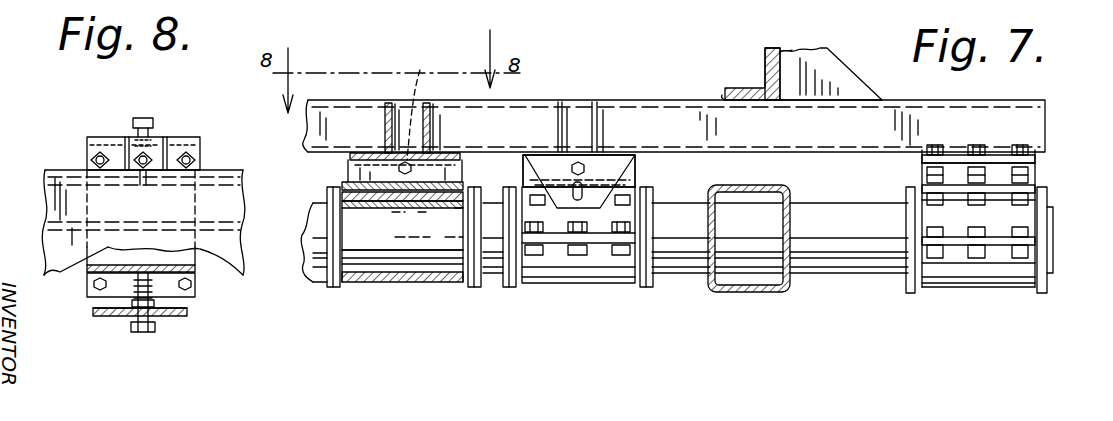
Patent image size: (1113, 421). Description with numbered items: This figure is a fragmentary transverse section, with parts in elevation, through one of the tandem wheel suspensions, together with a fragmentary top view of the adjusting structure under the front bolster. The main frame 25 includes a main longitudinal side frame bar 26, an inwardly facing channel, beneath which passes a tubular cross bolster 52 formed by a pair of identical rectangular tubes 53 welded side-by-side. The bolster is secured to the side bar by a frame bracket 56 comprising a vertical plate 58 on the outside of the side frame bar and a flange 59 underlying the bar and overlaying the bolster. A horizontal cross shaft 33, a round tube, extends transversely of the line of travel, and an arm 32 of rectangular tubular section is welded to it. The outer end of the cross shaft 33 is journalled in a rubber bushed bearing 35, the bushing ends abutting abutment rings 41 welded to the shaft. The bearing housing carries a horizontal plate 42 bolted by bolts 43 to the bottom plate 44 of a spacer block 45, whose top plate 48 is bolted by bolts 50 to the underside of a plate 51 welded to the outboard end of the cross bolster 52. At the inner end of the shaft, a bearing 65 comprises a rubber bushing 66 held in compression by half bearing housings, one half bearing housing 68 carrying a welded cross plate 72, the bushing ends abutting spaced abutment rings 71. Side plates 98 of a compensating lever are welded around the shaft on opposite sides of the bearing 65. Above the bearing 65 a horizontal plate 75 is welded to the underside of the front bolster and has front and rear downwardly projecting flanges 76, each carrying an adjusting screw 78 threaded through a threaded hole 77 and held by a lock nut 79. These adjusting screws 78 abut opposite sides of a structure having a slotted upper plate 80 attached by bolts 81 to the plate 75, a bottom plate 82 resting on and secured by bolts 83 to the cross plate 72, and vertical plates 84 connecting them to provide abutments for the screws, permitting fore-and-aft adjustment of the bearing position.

In FIG. 7, the main frame 25 is at (759, 51).
In FIG. 7, the main longitudinal side frame bar 26 is at (765, 50).
In FIG. 7, the arm 32 is at (750, 292).
In FIG. 7, the cross shaft 33 is at (422, 258).
In FIG. 7, the bearing 35 is at (996, 301).
In FIG. 7, the abutment ring 41 is at (910, 292).
In FIG. 7, the horizontal plate 42 is at (940, 197).
In FIG. 7, the bolt 43 is at (922, 202).
In FIG. 7, the bottom plate 44 is at (1035, 188).
In FIG. 7, the spacer block 45 is at (905, 178).
In FIG. 7, the top plate 48 is at (1035, 163).
In FIG. 7, the bolt 50 is at (1002, 142).
In FIG. 7, the plate 51 is at (992, 157).
In FIG. 7, the tubular cross bolster 52 is at (1036, 88).
In FIG. 8, the tube 53 is at (228, 248).
In FIG. 7, the tube 53 is at (928, 80).
In FIG. 7, the frame bracket 56 is at (875, 45).
In FIG. 7, the vertical plate 58 is at (782, 50).
In FIG. 7, the flange 59 is at (725, 95).
In FIG. 7, the bearing 65 is at (402, 297).
In FIG. 7, the rubber bushing 66 is at (445, 282).
In FIG. 7, the half bearing housing 68 is at (342, 207).
In FIG. 7, the abutment ring 71 is at (336, 290).
In FIG. 7, the cross plate 72 is at (434, 207).
In FIG. 8, the horizontal plate 75 is at (200, 148).
In FIG. 7, the horizontal plate 75 is at (360, 153).
In FIG. 8, the flange 76 is at (105, 316).
In FIG. 7, the flange 76 is at (636, 162).
In FIG. 7, the threaded hole 77 is at (474, 290).
In FIG. 8, the adjusting screw 78 is at (156, 90).
In FIG. 7, the adjusting screw 78 is at (420, 70).
In FIG. 8, the lock nut 79 is at (150, 316).
In FIG. 7, the upper plate 80 is at (432, 153).
In FIG. 8, the bolt 81 is at (100, 150).
In FIG. 8, the bottom plate 82 is at (195, 297).
In FIG. 7, the bottom plate 82 is at (452, 178).
In FIG. 8, the bolt 83 is at (87, 288).
In FIG. 7, the bolt 83 is at (505, 188).
In FIG. 8, the vertical plate 84 is at (110, 218).
In FIG. 7, the vertical plate 84 is at (350, 170).
In FIG. 7, the side plate 98 is at (330, 287).